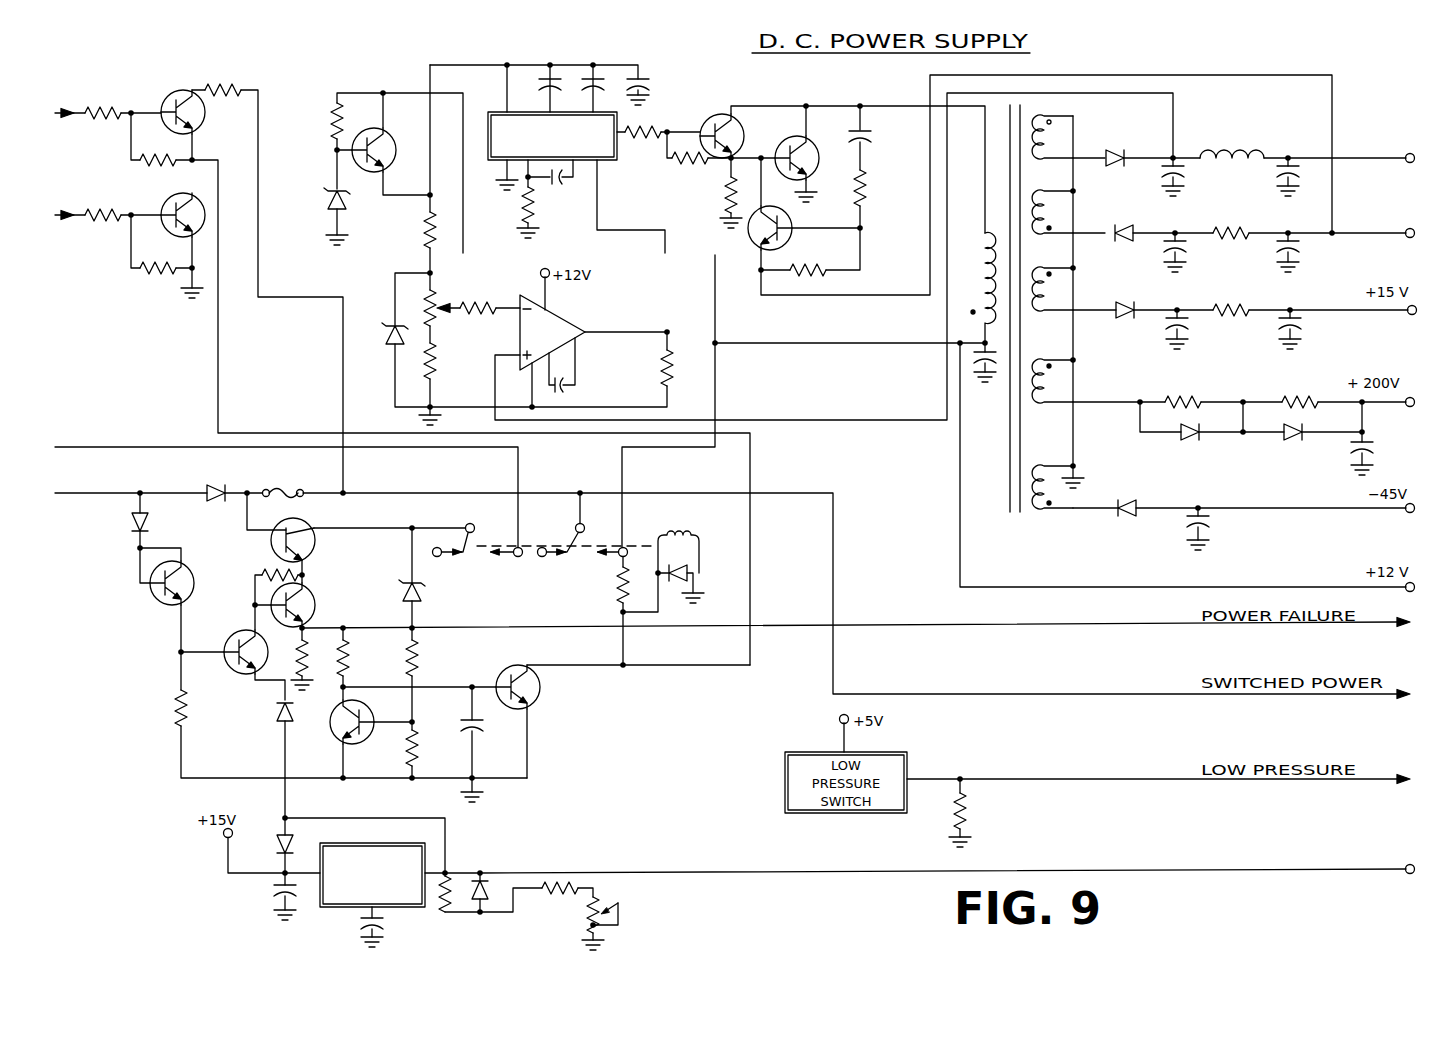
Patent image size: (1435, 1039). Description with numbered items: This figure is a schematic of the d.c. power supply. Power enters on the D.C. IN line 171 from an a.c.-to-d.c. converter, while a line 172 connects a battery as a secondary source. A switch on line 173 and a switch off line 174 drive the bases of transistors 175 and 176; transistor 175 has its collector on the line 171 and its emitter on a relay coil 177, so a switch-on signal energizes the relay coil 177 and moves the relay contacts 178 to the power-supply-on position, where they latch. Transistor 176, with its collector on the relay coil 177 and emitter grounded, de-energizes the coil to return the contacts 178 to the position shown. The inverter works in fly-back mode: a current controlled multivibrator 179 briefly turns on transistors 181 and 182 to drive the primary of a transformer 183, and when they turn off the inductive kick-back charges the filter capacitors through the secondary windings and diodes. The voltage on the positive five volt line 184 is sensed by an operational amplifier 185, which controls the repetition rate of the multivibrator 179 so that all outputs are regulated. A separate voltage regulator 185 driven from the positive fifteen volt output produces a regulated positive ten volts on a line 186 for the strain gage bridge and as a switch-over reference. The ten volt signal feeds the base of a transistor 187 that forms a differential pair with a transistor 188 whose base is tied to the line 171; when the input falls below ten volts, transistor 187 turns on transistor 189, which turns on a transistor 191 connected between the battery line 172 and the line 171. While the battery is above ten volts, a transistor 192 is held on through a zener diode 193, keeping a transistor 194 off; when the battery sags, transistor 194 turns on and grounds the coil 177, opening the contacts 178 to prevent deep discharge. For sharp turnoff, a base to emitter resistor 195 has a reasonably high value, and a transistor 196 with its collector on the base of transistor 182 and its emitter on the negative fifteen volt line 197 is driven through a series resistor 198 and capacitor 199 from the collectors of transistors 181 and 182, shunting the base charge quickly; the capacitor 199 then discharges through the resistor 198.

The D.C. IN line 171 is at (85, 495).
The battery line 172 is at (135, 448).
The switch on line 173 is at (80, 115).
The switch off line 174 is at (80, 217).
The transistor 175 is at (201, 126).
The transistor 176 is at (192, 195).
The relay coil 177 is at (675, 533).
The relay contacts 178 is at (528, 560).
The current controlled multivibrator 179 is at (612, 160).
The transistor 181 is at (728, 110).
The transistor 182 is at (793, 138).
The transformer 183 is at (1003, 402).
The positive five volt line 184 is at (1352, 159).
The operational amplifier 185 is at (557, 342).
The positive ten volt line 186 is at (1338, 870).
The transistor 187 is at (240, 632).
The transistor 188 is at (158, 596).
The transistor 189 is at (316, 610).
The transistor 191 is at (310, 524).
The transistor 192 is at (340, 738).
The zener diode 193 is at (428, 604).
The transistor 194 is at (540, 700).
The base to emitter resistor 195 is at (682, 162).
The transistor 196 is at (750, 232).
The negative fifteen volt output line 197 is at (1340, 236).
The resistor 198 is at (868, 190).
The capacitor 199 is at (867, 135).